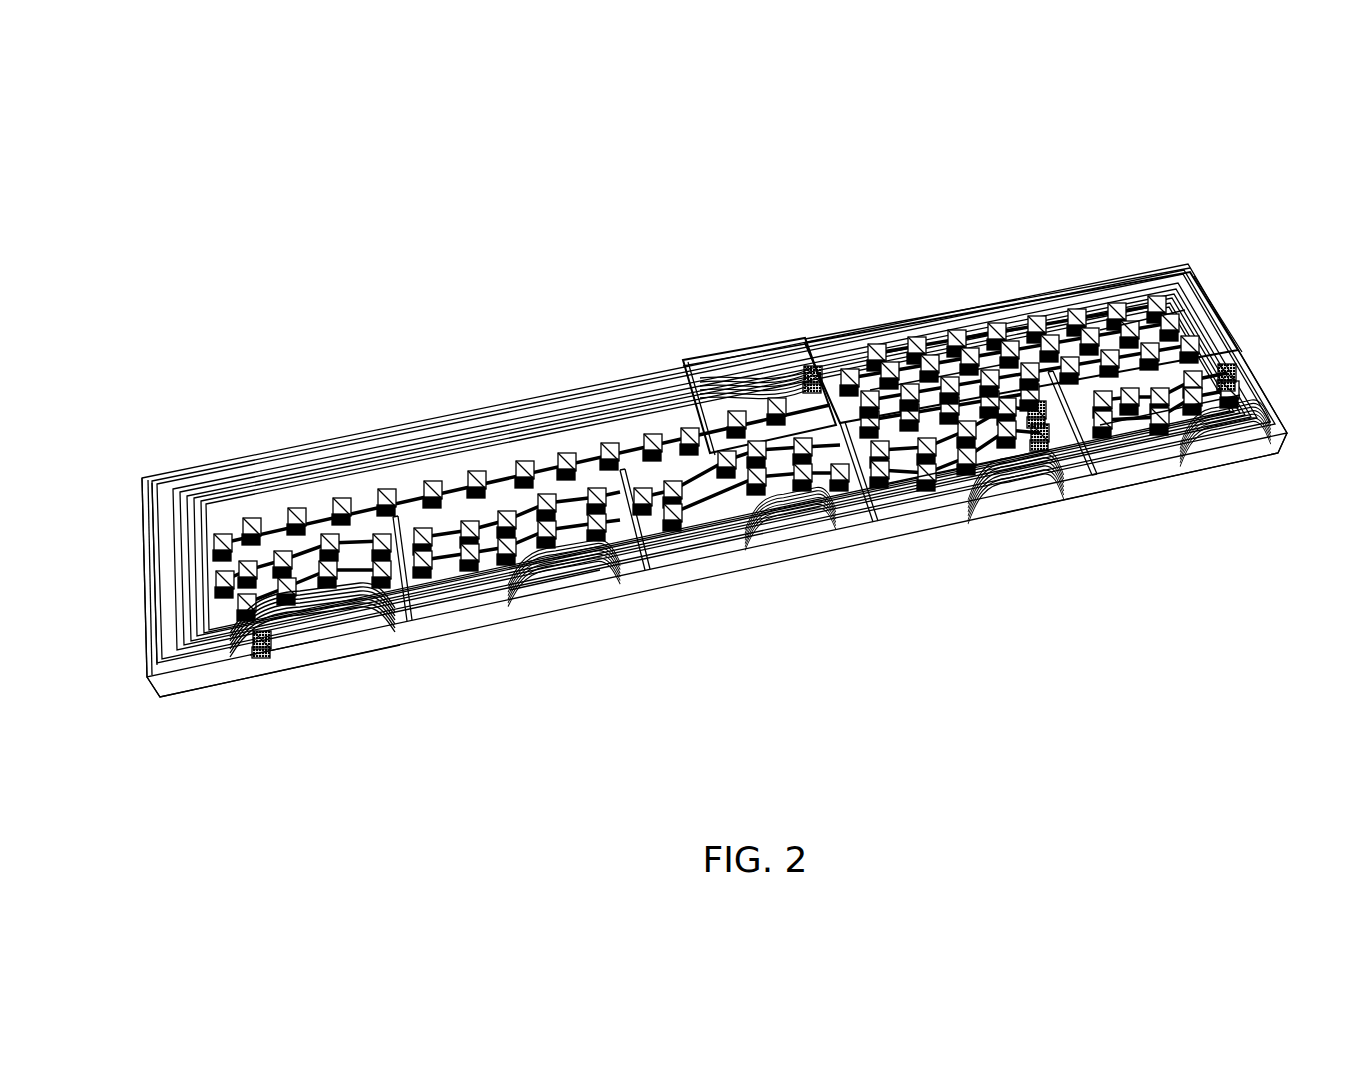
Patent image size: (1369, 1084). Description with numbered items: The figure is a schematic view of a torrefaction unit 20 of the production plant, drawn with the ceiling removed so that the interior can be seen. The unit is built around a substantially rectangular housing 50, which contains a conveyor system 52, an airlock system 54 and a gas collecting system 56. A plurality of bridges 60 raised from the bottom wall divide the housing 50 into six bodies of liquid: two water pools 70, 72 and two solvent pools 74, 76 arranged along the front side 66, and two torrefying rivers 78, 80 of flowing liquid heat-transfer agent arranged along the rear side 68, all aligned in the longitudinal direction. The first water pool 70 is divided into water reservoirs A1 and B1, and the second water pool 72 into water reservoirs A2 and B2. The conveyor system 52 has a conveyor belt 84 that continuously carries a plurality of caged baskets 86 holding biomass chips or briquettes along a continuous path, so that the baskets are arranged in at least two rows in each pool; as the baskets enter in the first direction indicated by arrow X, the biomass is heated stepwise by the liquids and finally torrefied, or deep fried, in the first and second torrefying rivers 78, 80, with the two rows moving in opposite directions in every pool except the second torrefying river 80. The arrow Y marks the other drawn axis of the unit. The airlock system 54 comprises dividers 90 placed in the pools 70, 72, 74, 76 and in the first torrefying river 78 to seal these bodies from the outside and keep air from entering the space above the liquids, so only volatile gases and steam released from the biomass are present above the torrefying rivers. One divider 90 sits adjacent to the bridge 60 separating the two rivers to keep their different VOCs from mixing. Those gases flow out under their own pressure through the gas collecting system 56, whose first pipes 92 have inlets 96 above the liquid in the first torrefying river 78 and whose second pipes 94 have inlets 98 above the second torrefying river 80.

The torrefaction unit 20 is at (776, 216).
The housing 50 is at (142, 468).
The conveyor system 52 is at (320, 500).
The airlock system 54 is at (1088, 478).
The gas collecting system 56 is at (290, 648).
The bridge 60 is at (748, 368).
The front side 66 is at (132, 652).
The rear side 68 is at (132, 504).
The water pool 70 is at (1226, 468).
The water pool 72 is at (909, 540).
The solvent pool 74 is at (702, 586).
The solvent pool 76 is at (431, 640).
The first torrefying river 78 is at (222, 442).
The second torrefying river 80 is at (1002, 296).
The conveyor belt 84 is at (360, 500).
The caged basket 86 is at (1092, 300).
The divider 90 is at (682, 373).
The first pipe 92 is at (520, 582).
The second pipe 94 is at (730, 377).
The inlet 96 is at (262, 652).
The inlet 98 is at (812, 368).
The water reservoir A1 is at (1145, 437).
The water reservoir A2 is at (950, 482).
The water reservoir B1 is at (1200, 327).
The water reservoir B2 is at (905, 377).
The arrow X is at (1262, 403).
The Y axis Y is at (1265, 375).